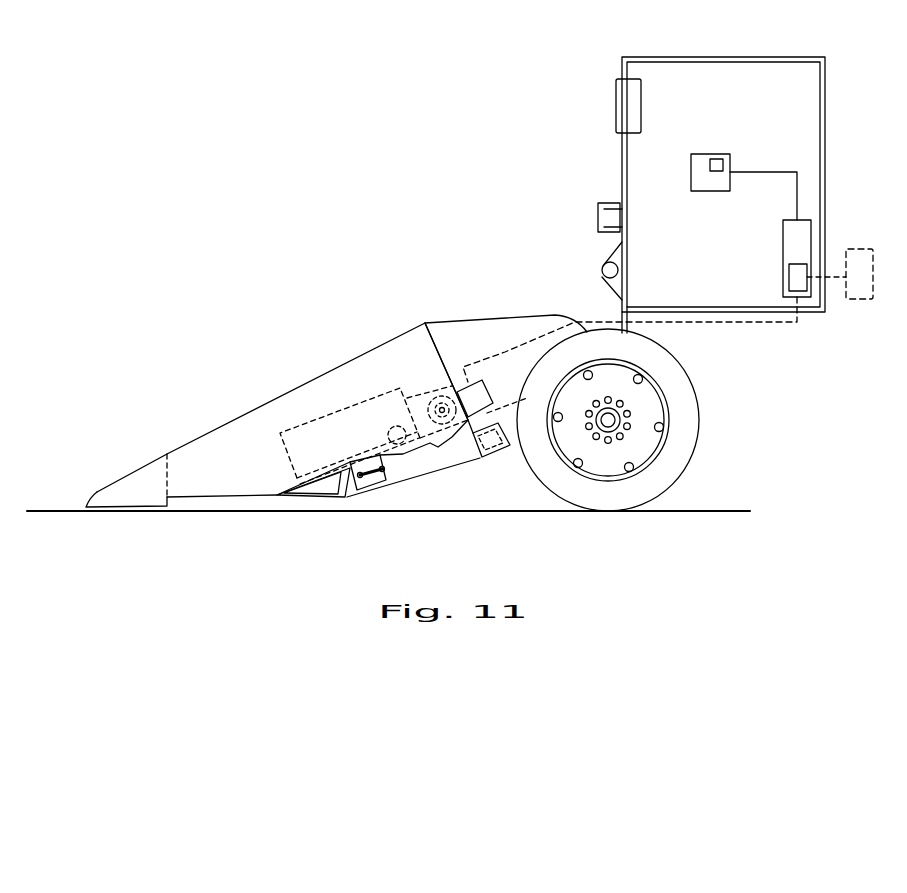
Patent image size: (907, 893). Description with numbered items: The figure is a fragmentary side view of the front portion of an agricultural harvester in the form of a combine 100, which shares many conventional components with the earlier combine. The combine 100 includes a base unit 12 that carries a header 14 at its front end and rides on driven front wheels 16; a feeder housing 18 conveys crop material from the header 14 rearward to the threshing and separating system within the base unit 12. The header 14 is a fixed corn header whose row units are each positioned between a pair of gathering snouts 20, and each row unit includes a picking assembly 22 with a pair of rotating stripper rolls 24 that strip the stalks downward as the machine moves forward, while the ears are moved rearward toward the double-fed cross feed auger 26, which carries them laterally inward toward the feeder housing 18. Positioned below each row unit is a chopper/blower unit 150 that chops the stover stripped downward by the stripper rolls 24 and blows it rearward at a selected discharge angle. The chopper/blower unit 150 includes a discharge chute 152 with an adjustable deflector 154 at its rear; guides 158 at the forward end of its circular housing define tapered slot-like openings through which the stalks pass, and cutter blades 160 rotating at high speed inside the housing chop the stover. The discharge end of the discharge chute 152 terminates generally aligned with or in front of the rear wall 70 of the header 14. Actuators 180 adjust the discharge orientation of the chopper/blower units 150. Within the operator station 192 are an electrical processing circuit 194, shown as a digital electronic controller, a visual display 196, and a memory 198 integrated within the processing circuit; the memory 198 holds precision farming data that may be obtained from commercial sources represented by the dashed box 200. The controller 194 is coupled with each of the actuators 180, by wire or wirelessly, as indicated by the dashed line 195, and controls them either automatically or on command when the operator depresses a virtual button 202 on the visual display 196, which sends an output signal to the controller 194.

The combine 100 is at (600, 78).
The base unit 12 is at (618, 168).
The header 14 is at (310, 366).
The front wheels 16 is at (685, 460).
The feeder housing 18 is at (503, 318).
The snouts 20 is at (127, 475).
The picking assembly 22 is at (293, 427).
The stripper rolls 24 is at (297, 479).
The double-fed cross feed auger 26 is at (433, 397).
The rear wall 70 is at (440, 340).
The chopper/blower unit 150 is at (380, 490).
The discharge chute 152 is at (447, 470).
The adjustable deflector 154 is at (498, 455).
The guides 158 is at (307, 500).
The cutter blades 160 is at (362, 483).
The actuators 180 is at (482, 381).
The operator station 192 is at (723, 57).
The electrical processing circuit 194 is at (783, 231).
The dashed line 195 is at (748, 322).
The visual display 196 is at (704, 154).
The memory 198 is at (790, 272).
The commercial sources 200 is at (862, 249).
The virtual button 202 is at (723, 160).